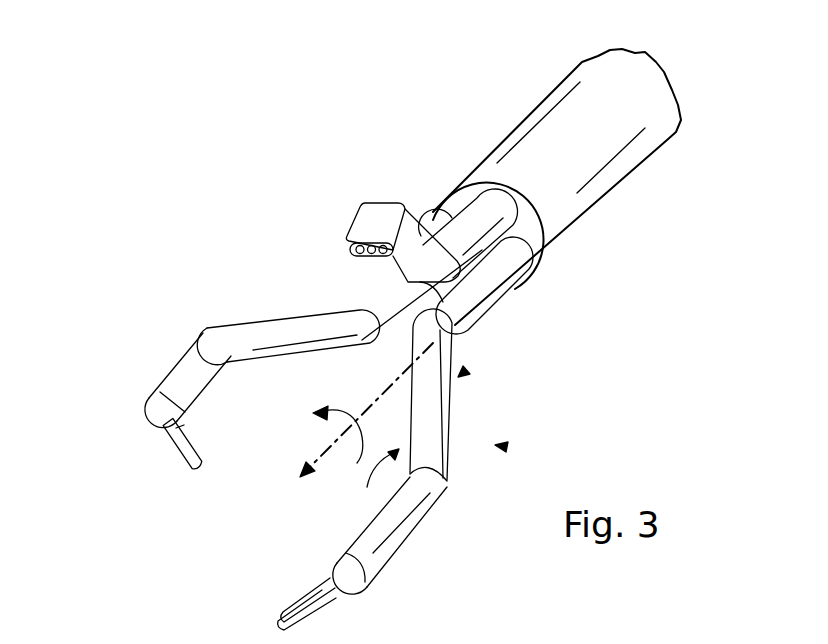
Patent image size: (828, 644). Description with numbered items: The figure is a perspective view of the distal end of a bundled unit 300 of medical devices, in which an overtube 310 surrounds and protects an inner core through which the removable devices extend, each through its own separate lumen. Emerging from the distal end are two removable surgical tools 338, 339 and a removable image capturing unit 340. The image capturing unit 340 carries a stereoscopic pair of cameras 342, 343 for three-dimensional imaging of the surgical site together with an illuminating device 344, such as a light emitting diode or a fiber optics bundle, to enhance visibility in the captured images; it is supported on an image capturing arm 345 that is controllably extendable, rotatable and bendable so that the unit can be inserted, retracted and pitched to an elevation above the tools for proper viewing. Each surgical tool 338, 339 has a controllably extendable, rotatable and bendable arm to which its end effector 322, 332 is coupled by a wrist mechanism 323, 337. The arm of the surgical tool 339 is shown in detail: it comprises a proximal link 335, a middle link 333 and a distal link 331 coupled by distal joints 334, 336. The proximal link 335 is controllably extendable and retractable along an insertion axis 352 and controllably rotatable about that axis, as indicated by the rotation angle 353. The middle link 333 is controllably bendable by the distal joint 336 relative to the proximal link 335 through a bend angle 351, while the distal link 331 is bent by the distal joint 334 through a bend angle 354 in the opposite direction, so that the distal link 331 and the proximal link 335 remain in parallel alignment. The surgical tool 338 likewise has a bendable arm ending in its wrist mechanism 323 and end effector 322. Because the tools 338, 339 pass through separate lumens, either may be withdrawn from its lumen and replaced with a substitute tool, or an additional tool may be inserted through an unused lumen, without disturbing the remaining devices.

The bundled unit 300 is at (222, 152).
The overtube 310 is at (525, 113).
The end effector 322 is at (183, 457).
The wrist mechanism 323 is at (150, 400).
The distal link 331 is at (428, 522).
The end effector 332 is at (295, 598).
The middle link 333 is at (452, 407).
The distal joint 334 is at (445, 484).
The proximal link 335 is at (498, 292).
The distal joint 336 is at (480, 323).
The wrist mechanism 337 is at (356, 596).
The surgical tool 338 is at (163, 342).
The surgical tool 339 is at (505, 447).
The image capturing unit 340 is at (355, 152).
The camera 342 is at (350, 248).
The camera 343 is at (357, 232).
The illuminating device 344 is at (372, 258).
The image capturing arm 345 is at (422, 222).
The bend angle 351 is at (466, 371).
The insertion axis 352 is at (368, 398).
The rotation angle 353 is at (322, 411).
The bend angle 354 is at (378, 487).